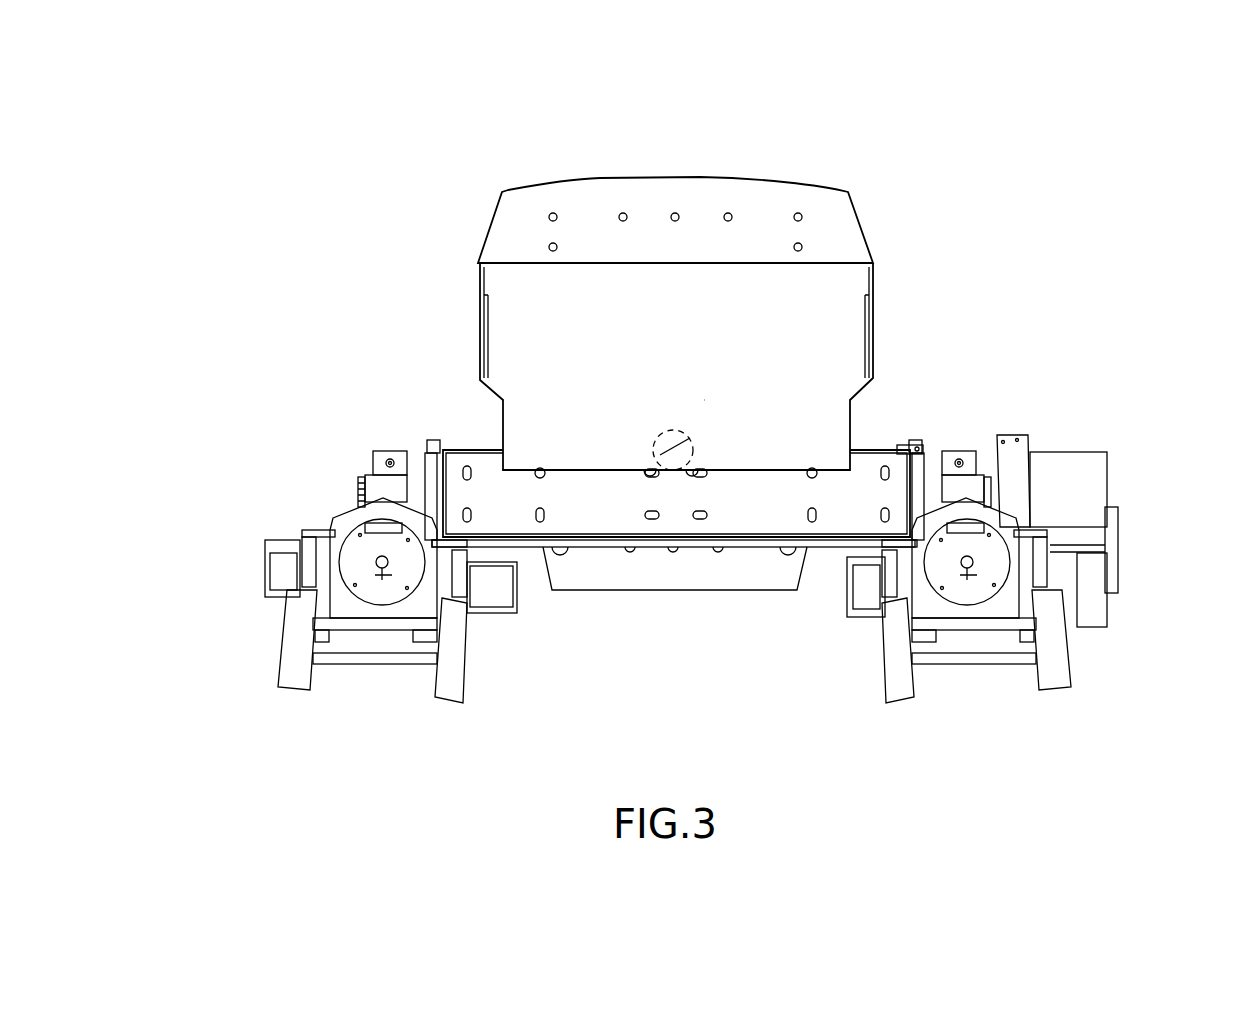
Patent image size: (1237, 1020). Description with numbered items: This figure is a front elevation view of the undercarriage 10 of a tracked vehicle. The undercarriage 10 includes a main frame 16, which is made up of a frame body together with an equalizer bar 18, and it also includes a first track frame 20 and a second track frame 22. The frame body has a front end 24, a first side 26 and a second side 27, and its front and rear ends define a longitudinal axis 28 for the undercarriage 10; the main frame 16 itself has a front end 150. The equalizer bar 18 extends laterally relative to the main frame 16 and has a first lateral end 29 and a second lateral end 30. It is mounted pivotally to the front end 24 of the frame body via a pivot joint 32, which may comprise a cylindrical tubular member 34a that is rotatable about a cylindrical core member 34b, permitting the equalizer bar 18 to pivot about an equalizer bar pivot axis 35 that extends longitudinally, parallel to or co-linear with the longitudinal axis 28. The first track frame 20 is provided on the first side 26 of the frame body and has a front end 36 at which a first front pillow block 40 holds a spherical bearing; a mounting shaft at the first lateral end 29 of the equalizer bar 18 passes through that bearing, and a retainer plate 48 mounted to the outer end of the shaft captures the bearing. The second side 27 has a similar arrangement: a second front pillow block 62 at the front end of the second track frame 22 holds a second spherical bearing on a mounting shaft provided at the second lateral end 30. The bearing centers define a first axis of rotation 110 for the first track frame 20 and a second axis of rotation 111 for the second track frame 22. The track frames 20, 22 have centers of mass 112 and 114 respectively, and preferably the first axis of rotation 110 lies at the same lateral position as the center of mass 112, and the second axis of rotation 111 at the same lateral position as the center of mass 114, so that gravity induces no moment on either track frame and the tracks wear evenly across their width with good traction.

The undercarriage 10 is at (970, 143).
The main frame 16 is at (865, 232).
The equalizer bar 18 is at (878, 442).
The first track frame 20 is at (283, 645).
The second track frame 22 is at (1100, 631).
The front end 24 is at (822, 327).
The first side 26 is at (475, 337).
The second side 27 is at (873, 295).
The longitudinal axis 28 is at (677, 333).
The first lateral end 29 is at (433, 440).
The second lateral end 30 is at (920, 445).
The pivot joint 32 is at (676, 472).
The cylindrical tubular member 34a is at (678, 427).
The cylindrical core member 34b is at (690, 447).
The equalizer bar pivot axis 35 is at (673, 450).
The front end 36 is at (268, 602).
The first front pillow block 40 is at (375, 450).
The retainer plate 48 is at (360, 478).
The second front pillow block 62 is at (975, 450).
The first axis of rotation 110 is at (347, 518).
The second axis of rotation 111 is at (995, 503).
The center of mass 112 is at (383, 578).
The center of mass 114 is at (967, 578).
The front end 150 is at (843, 352).